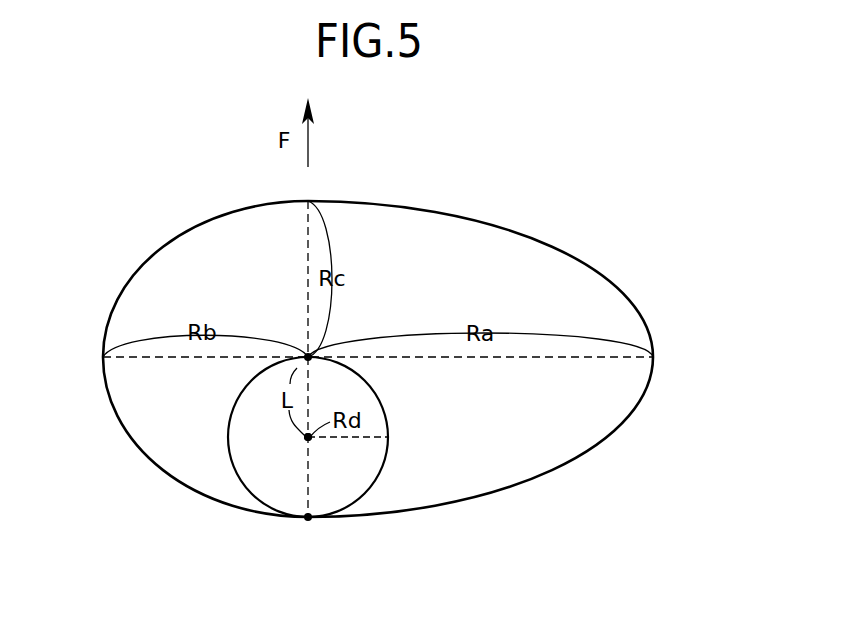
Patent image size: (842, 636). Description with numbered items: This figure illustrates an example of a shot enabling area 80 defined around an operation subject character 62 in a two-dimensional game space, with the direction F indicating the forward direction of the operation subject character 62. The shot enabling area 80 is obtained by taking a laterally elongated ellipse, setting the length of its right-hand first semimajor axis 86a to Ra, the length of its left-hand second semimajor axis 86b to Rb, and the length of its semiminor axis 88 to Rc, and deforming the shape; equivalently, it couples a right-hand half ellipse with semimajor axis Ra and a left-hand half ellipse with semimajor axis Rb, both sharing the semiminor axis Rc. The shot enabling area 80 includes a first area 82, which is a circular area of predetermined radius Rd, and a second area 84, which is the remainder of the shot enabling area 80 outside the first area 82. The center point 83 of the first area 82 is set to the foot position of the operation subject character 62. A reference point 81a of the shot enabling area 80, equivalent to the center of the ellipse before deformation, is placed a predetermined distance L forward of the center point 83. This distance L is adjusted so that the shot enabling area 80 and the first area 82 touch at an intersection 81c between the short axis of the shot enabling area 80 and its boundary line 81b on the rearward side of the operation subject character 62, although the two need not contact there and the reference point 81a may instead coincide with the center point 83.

The shot enabling area 80 is at (532, 198).
The reference point 81a is at (303, 353).
The boundary line 81b is at (500, 495).
The intersection 81c is at (307, 522).
The first area 82 is at (380, 466).
The center point 83 is at (305, 439).
The operation subject character 62 is at (308, 437).
The second area 84 is at (537, 468).
The first semimajor axis 86a is at (487, 362).
The second semimajor axis 86b is at (172, 362).
The semiminor axis 88 is at (307, 248).